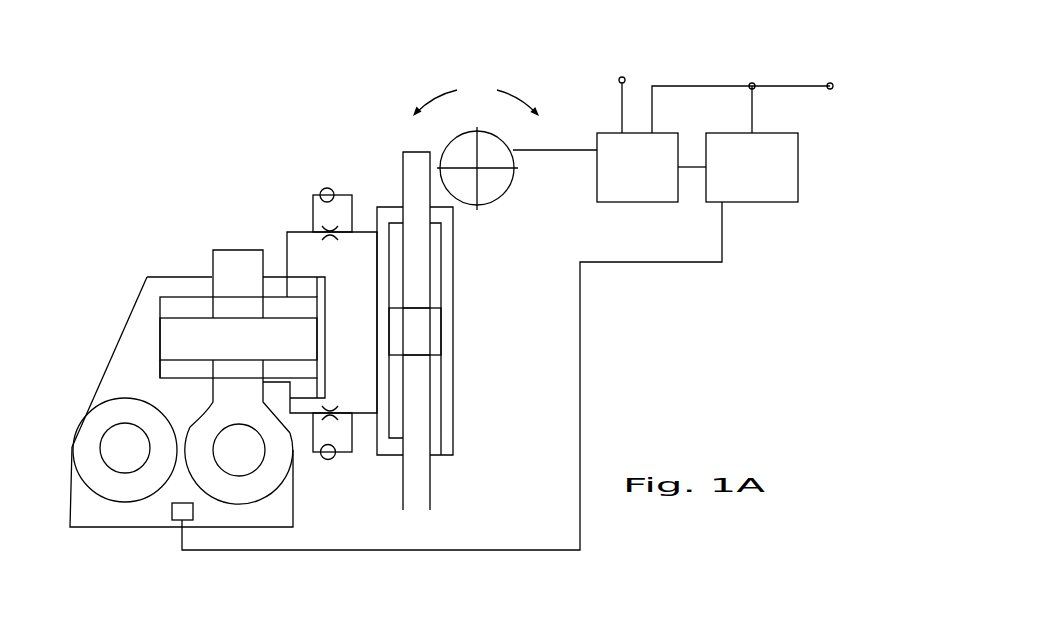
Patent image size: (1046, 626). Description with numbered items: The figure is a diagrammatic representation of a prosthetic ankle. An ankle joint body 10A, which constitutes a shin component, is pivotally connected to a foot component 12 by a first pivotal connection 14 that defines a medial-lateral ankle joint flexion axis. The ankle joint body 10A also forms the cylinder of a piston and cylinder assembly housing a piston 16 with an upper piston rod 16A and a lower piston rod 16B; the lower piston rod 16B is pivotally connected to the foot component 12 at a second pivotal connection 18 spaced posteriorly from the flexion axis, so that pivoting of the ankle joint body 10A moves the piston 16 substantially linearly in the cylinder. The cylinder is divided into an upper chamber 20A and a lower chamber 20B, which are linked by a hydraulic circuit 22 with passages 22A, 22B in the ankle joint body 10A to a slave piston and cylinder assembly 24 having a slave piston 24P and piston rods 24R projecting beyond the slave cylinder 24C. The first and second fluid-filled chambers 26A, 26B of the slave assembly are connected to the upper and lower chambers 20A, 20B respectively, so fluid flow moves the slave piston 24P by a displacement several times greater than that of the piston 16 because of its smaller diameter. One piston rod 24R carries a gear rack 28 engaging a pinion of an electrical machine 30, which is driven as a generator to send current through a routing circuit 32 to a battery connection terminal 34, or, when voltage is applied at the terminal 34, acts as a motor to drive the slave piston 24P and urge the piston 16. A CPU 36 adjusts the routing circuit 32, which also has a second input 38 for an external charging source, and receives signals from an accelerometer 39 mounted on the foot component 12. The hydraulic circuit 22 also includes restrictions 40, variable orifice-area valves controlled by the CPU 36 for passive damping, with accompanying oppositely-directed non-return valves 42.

The ankle joint body 10A is at (120, 322).
The foot component 12 is at (80, 523).
The first pivotal connection 14 is at (117, 430).
The piston 16 is at (183, 325).
The upper piston rod 16A is at (215, 267).
The lower piston rod 16B is at (255, 373).
The second pivotal connection 18 is at (253, 470).
The upper chamber 20A is at (302, 308).
The lower chamber 20B is at (170, 373).
The hydraulic circuit 22 is at (302, 232).
The passage 22A is at (287, 285).
The passage 22B is at (290, 392).
The slave piston and cylinder assembly 24 is at (385, 207).
The slave piston rod 24R is at (429, 268).
The slave cylinder 24C is at (442, 288).
The slave piston 24P is at (432, 328).
The first fluid-filled chamber 26A is at (438, 235).
The second fluid-filled chamber 26B is at (438, 425).
The gear rack 28 is at (435, 197).
The electrical machine 30 is at (518, 187).
The routing circuit 32 is at (638, 203).
The battery connection terminal 34 is at (832, 83).
The CPU 36 is at (752, 203).
The second input 38 is at (625, 77).
The accelerometer 39 is at (173, 517).
The restriction 40 is at (325, 230).
The non-return valve 42 is at (327, 188).